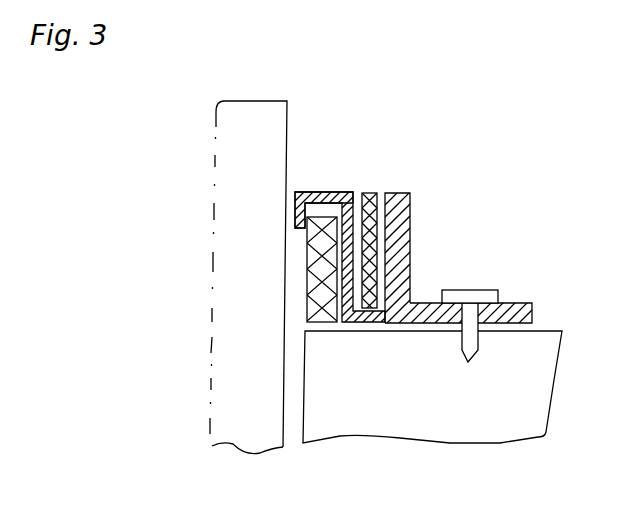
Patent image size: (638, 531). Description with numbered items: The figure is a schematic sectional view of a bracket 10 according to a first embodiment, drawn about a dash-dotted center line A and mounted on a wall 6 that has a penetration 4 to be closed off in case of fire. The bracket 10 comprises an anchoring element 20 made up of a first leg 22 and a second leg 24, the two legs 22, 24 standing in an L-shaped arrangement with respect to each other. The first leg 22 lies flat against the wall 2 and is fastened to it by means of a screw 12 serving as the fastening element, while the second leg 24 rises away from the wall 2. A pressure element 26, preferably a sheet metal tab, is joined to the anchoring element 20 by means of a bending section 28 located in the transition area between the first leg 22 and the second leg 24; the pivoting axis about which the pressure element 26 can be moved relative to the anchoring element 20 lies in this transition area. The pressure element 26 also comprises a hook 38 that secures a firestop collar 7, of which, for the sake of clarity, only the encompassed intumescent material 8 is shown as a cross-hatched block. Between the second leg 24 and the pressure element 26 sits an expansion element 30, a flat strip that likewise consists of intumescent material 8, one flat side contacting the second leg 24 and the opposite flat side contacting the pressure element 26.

The wall 2 is at (513, 416).
The penetration 4 is at (294, 412).
The wall 6 is at (252, 122).
The firestop collar 7 is at (324, 218).
The intumescent material 8 is at (375, 193).
The bracket 10 is at (454, 156).
The screw 12 is at (460, 366).
The anchoring element 20 is at (446, 258).
The first leg 22 is at (520, 303).
The second leg 24 is at (411, 238).
The pressure element 26 is at (342, 180).
The bending section 28 is at (385, 330).
The expansion element 30 is at (372, 191).
The hook 38 is at (299, 185).
The axis of symmetry A is at (213, 311).